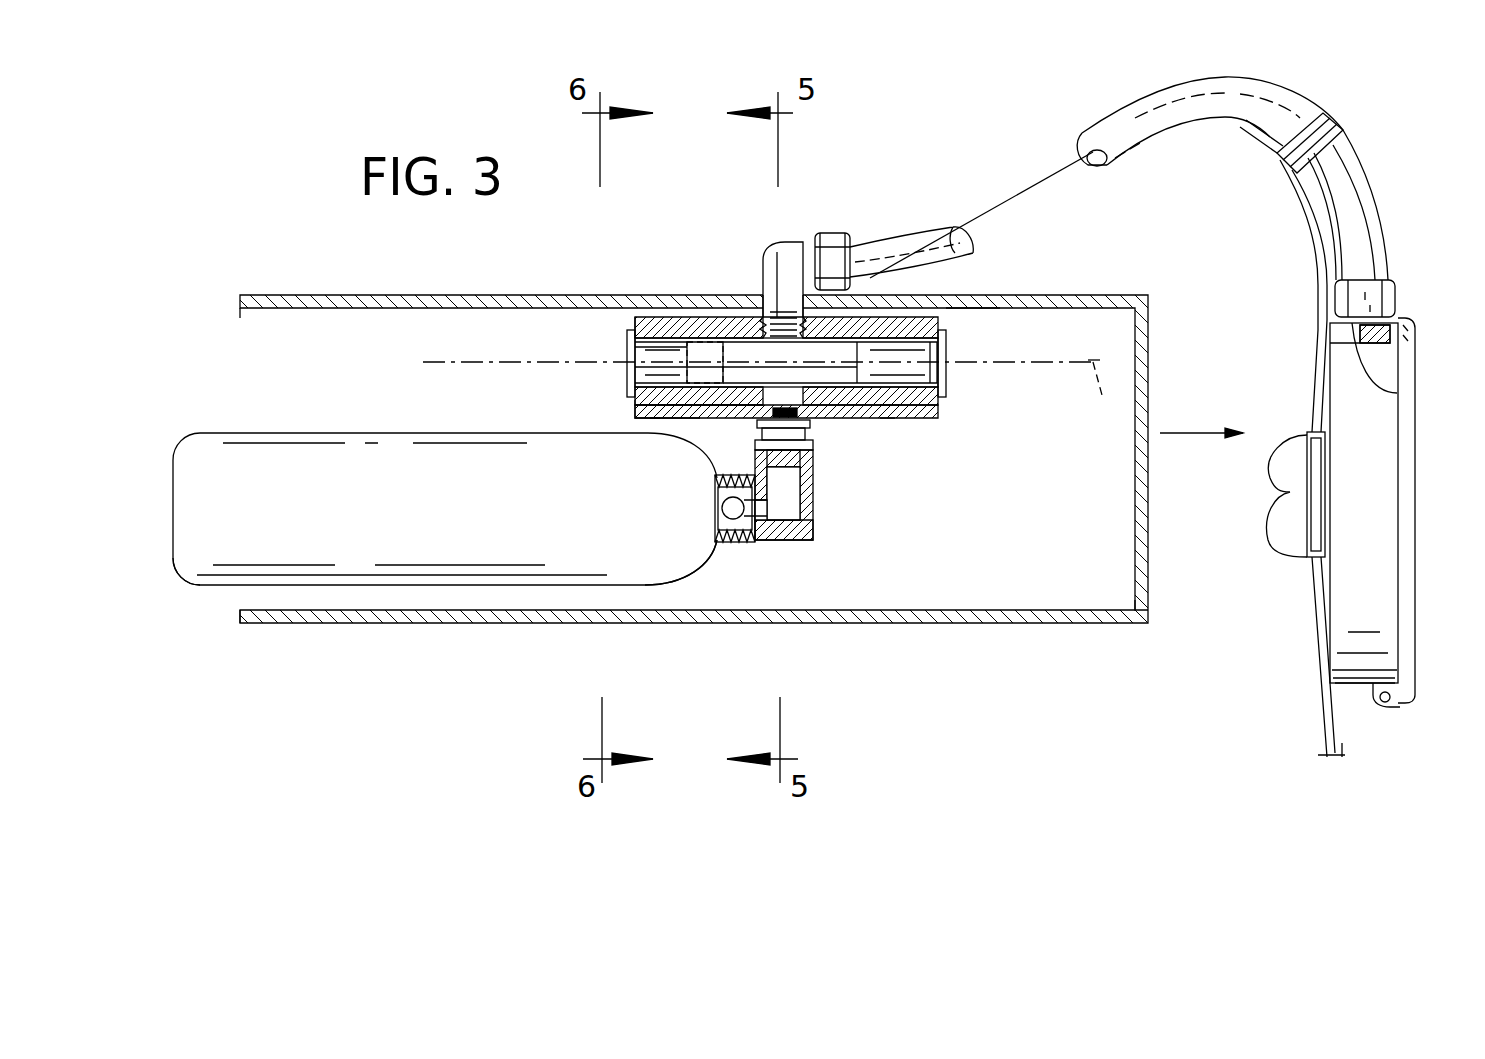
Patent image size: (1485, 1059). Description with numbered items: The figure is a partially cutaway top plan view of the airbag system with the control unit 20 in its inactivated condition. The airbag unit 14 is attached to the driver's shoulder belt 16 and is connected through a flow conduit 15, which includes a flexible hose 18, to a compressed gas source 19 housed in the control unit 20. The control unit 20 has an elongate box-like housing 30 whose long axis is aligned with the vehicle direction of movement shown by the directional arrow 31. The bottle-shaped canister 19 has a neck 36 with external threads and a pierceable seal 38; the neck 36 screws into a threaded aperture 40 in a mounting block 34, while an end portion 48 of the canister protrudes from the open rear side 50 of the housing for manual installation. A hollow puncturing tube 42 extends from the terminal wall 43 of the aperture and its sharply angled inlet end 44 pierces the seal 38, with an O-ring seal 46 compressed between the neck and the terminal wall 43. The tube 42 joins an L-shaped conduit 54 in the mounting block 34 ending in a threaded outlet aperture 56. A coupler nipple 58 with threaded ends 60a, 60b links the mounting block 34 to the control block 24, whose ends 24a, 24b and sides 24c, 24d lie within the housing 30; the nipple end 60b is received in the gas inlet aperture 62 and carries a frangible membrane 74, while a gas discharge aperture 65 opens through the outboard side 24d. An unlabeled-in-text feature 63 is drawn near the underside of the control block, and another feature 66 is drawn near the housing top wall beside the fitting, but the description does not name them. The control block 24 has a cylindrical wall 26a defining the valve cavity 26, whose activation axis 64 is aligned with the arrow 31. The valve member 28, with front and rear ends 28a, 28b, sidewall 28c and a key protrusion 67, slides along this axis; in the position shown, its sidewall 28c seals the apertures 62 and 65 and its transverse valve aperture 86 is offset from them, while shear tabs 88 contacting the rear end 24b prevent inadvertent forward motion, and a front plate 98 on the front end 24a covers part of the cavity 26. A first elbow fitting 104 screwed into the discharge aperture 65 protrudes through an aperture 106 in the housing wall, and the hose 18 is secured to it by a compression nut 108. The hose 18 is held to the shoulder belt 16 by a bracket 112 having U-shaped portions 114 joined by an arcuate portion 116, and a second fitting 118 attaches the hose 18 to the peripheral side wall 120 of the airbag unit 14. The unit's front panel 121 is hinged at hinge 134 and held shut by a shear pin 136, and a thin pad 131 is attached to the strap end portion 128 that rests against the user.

The airbag unit 14 is at (1359, 695).
The flow conduit 15 is at (1076, 125).
The shoulder belt 16 is at (1317, 230).
The flexible hose 18 is at (1370, 187).
The compressed gas source 19 is at (267, 433).
The activation control unit 20 is at (452, 634).
The control block 24 is at (774, 381).
The front end of control block 24a is at (940, 413).
The rear end of control block 24b is at (633, 414).
The inboard side of control block 24c is at (667, 420).
The outboard side of control block 24d is at (763, 317).
The valve cavity 26 is at (953, 359).
The cylindrical wall of valve cavity 26a is at (943, 373).
The valve member 28 is at (763, 289).
The front end of valve member 28a is at (883, 317).
The rear end of valve member 28b is at (627, 380).
The cylindrical sidewall of valve member 28c is at (813, 347).
The housing 30 is at (1143, 625).
The directional arrow 31 is at (1195, 433).
The mounting block 34 is at (816, 528).
The canister neck 36 is at (683, 541).
The pierceable seal 38 is at (798, 542).
The threaded aperture 40 is at (717, 497).
The puncturing tube 42 is at (715, 532).
The terminal wall 43 is at (720, 530).
The inlet end 44 is at (633, 405).
The O-ring seal 46 is at (773, 542).
The end portion of canister 48 is at (205, 588).
The open rear side of housing 50 is at (240, 620).
The L-shaped conduit 54 is at (777, 508).
The threaded outlet aperture 56 is at (800, 470).
The coupler nipple 58 is at (813, 447).
The nipple end 60a is at (757, 445).
The nipple end 60b is at (757, 430).
The gas inlet aperture 62 is at (890, 419).
The passage 63 is at (887, 425).
The activation axis 64 is at (772, 395).
The gas discharge aperture 65 is at (766, 260).
The housing opening 66 is at (965, 307).
The key protrusion 67 is at (627, 347).
The frangible membrane 74 is at (723, 508).
The valve aperture 86 is at (637, 316).
The shear tabs 88 is at (628, 330).
The front plate 98 is at (947, 340).
The first elbow fitting 104 is at (765, 312).
The aperture 106 is at (802, 297).
The compression nut 108 is at (858, 233).
The bracket 112 is at (1315, 122).
The U-shaped portions 114 is at (1285, 165).
The arcuate bracket portion 116 is at (1340, 128).
The second fitting 118 is at (1395, 300).
The peripheral side wall 120 is at (1361, 556).
The hinged front panel 121 is at (1415, 550).
The strap end portion 128 is at (1307, 478).
The thin pad 131 is at (1283, 540).
The hinge 134 is at (1398, 705).
The shear pin 136 is at (1353, 357).